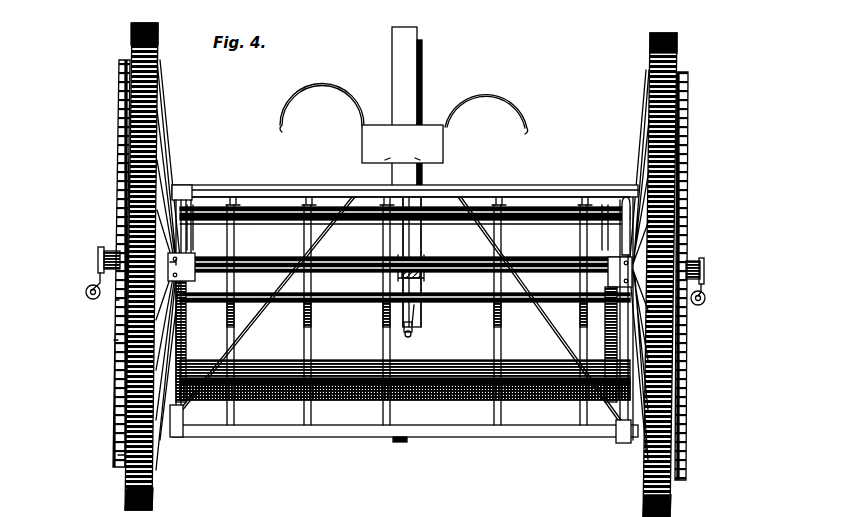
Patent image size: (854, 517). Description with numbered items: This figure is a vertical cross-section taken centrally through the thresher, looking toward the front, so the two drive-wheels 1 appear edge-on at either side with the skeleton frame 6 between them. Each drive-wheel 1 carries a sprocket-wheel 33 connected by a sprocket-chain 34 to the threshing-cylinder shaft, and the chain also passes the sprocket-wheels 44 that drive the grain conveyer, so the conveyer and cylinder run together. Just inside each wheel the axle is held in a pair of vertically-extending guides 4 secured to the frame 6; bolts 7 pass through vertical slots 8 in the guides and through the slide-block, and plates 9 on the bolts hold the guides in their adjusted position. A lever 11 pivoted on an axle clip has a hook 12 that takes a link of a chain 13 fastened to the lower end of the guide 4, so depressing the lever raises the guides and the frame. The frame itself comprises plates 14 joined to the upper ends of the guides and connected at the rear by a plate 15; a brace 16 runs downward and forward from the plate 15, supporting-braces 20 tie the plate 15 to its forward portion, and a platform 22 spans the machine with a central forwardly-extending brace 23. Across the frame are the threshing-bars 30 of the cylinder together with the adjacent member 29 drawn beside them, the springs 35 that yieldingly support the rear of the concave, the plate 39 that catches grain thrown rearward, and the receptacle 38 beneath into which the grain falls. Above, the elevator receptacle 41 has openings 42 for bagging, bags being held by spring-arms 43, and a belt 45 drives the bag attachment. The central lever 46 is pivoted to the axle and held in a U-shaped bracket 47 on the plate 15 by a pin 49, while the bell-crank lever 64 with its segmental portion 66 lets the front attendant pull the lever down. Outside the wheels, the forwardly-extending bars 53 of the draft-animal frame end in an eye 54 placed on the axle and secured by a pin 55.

The drive-wheels 1 is at (130, 229).
The vertically-extending guides 4 is at (193, 237).
The frame 6 is at (262, 189).
The bolts 7 is at (195, 252).
The vertical slots 8 is at (186, 340).
The plates 9 is at (195, 273).
The lever 11 is at (600, 200).
The hook 12 is at (418, 300).
The chain 13 is at (190, 308).
The plates 14 is at (178, 193).
The plate 15 is at (318, 190).
The brace 16 is at (188, 190).
The supporting-braces 20 is at (245, 345).
The platform 22 is at (352, 437).
The forwardly-extending brace 23 is at (398, 442).
The upper cross bar 29 is at (508, 197).
The threshing-bars 30 is at (548, 190).
The sprocket-wheel 33 is at (116, 330).
The sprocket-chain 34 is at (120, 170).
The springs 35 is at (310, 356).
The receptacle 38 is at (447, 360).
The plate 39 is at (452, 197).
The receptacle 41 is at (442, 138).
The openings 42 is at (411, 150).
The spring-arms 43 is at (332, 80).
The sprocket-wheels 44 is at (117, 455).
The belt 45 is at (422, 88).
The lever 46 is at (420, 240).
The U-shaped bracket 47 is at (405, 254).
The pin 49 is at (378, 292).
The forwardly-extending bars 53 is at (81, 291).
The eye 54 is at (100, 276).
The pin 55 is at (98, 250).
The bell-crank lever 64 is at (412, 327).
The segmental portion 66 is at (421, 237).